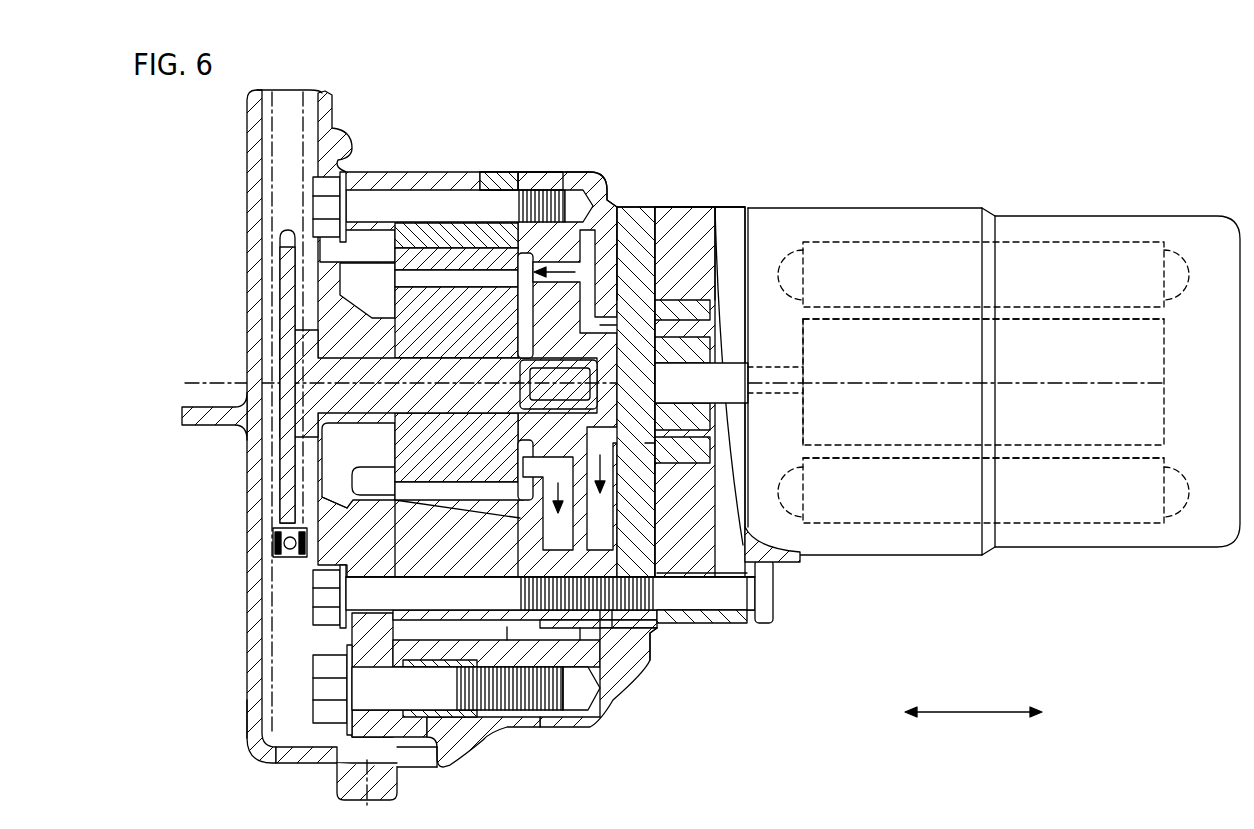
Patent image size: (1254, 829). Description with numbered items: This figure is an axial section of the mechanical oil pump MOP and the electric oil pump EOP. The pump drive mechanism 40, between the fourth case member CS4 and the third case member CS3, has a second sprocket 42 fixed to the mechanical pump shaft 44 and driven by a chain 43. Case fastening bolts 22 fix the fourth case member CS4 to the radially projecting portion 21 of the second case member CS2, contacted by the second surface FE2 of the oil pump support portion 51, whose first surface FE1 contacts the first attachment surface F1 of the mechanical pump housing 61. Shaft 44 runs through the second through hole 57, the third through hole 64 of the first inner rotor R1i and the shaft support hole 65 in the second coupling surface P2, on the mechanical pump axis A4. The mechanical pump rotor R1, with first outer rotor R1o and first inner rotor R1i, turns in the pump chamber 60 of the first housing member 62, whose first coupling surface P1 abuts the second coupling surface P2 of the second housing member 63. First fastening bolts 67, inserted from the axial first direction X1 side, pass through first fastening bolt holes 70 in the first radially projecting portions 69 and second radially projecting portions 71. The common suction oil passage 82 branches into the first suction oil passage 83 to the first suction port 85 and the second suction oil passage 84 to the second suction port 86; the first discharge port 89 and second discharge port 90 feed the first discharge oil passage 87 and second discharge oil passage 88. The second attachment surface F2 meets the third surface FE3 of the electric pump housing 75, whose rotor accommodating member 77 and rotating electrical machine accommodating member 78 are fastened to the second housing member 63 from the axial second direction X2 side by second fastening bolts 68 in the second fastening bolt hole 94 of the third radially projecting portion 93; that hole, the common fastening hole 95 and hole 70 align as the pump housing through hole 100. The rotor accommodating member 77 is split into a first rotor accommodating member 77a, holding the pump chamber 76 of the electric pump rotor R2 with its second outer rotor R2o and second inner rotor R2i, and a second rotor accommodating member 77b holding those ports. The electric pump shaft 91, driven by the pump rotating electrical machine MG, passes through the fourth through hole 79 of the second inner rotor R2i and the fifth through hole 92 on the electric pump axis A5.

The pump drive mechanism 40 is at (265, 168).
The second sprocket 42 is at (288, 245).
The mechanical pump shaft 44 is at (283, 358).
The chain 43 is at (290, 557).
The first fastening bolts 67 is at (362, 200).
The case fastening bolts 22 is at (320, 688).
The oil pump support portion 51 is at (337, 770).
The second through hole 57 is at (382, 355).
The pump chamber 60 is at (430, 285).
The third through hole 64 is at (485, 356).
The shaft support hole 65 is at (548, 345).
The first discharge port 89 is at (513, 472).
The first fastening bolt holes 70 is at (582, 112).
The pump housing through hole 100 is at (550, 673).
The first suction port 85 is at (493, 225).
The mechanical pump housing 61 is at (560, 122).
The first housing member 62 is at (507, 173).
The second housing member 63 is at (548, 173).
The first suction oil passage 83 is at (588, 193).
The common suction oil passage 82 is at (602, 190).
The second suction oil passage 84 is at (617, 320).
The second suction port 86 is at (665, 262).
The pump chamber 76 is at (692, 300).
The rotor accommodating member 77 is at (728, 137).
The first rotor accommodating member 77a is at (728, 208).
The second rotor accommodating member 77b is at (652, 320).
The electric pump housing 75 is at (760, 110).
The rotating electrical machine accommodating member 78 is at (763, 215).
The fourth through hole 79 is at (742, 352).
The electric pump shaft 91 is at (748, 378).
The fifth through hole 92 is at (748, 392).
The second discharge port 90 is at (648, 443).
The second fastening bolts 68 is at (767, 595).
The second fastening bolt hole 94 is at (697, 604).
The third radially projecting portion 93 is at (722, 618).
The second discharge oil passage 88 is at (650, 633).
The second radially projecting portions 71 is at (603, 600).
The common fastening hole 95 is at (612, 630).
The first discharge oil passage 87 is at (585, 700).
The radially projecting portion 21 is at (440, 730).
The first radially projecting portions 69 is at (507, 627).
The mechanical oil pump MOP is at (398, 155).
The pump rotating electrical machine MG is at (860, 242).
The electric oil pump EOP is at (740, 663).
The mechanical pump axis A4 is at (465, 383).
The electric pump axis A5 is at (971, 383).
The mechanical pump rotor R1 is at (190, 485).
The first inner rotor R1i is at (395, 472).
The first outer rotor R1o is at (395, 500).
The electric pump rotor R2 is at (888, 500).
The second outer rotor R2o is at (745, 415).
The second inner rotor R2i is at (745, 438).
The second case member CS2 is at (388, 780).
The third case member CS3 is at (250, 722).
The fourth case member CS4 is at (298, 790).
The first surface FE1 is at (400, 528).
The second surface FE2 is at (440, 767).
The third surface FE3 is at (612, 518).
The first coupling surface P1 is at (520, 530).
The second coupling surface P2 is at (548, 712).
The first attachment surface F1 is at (390, 557).
The second attachment surface F2 is at (600, 462).
The axial first direction X1 is at (959, 713).
The axial second direction X2 is at (1049, 713).